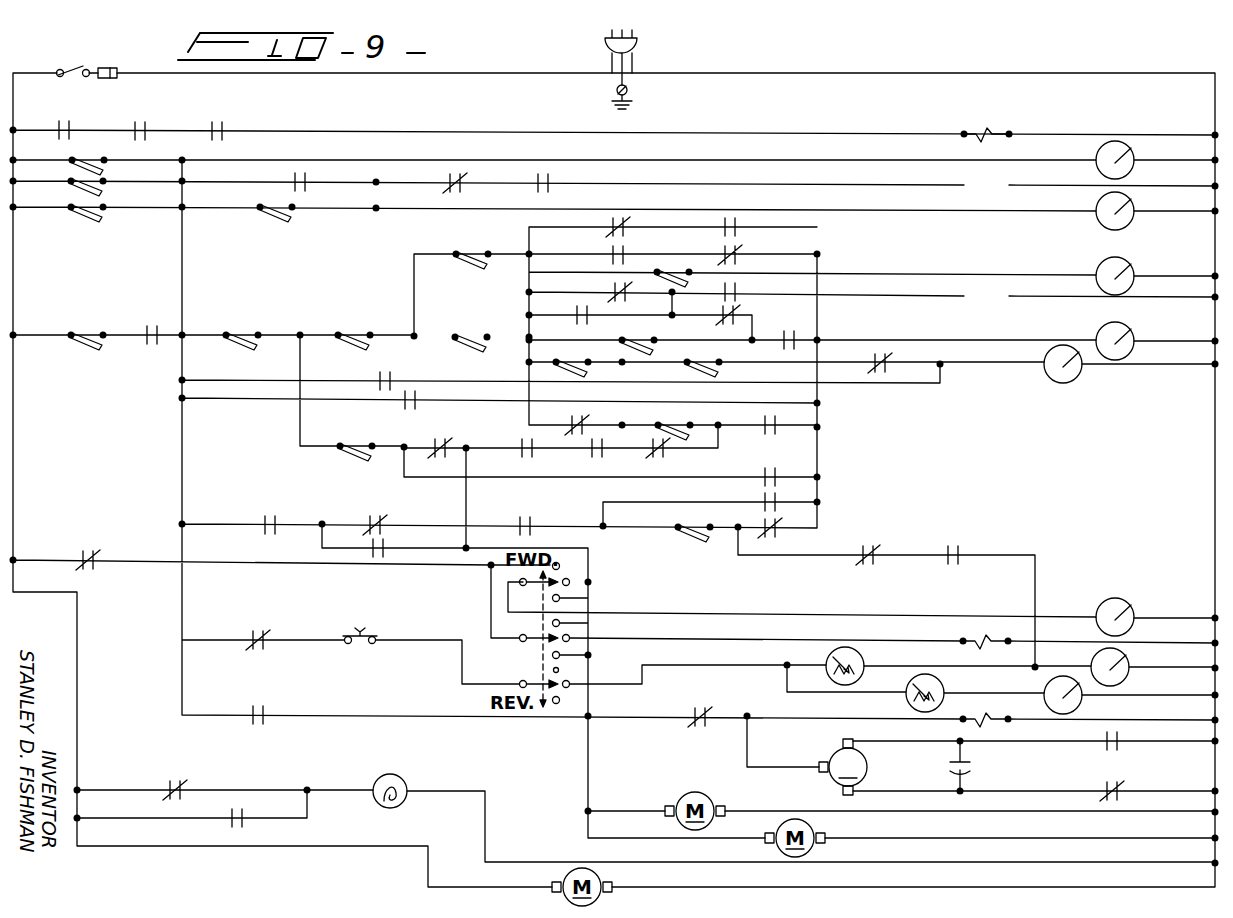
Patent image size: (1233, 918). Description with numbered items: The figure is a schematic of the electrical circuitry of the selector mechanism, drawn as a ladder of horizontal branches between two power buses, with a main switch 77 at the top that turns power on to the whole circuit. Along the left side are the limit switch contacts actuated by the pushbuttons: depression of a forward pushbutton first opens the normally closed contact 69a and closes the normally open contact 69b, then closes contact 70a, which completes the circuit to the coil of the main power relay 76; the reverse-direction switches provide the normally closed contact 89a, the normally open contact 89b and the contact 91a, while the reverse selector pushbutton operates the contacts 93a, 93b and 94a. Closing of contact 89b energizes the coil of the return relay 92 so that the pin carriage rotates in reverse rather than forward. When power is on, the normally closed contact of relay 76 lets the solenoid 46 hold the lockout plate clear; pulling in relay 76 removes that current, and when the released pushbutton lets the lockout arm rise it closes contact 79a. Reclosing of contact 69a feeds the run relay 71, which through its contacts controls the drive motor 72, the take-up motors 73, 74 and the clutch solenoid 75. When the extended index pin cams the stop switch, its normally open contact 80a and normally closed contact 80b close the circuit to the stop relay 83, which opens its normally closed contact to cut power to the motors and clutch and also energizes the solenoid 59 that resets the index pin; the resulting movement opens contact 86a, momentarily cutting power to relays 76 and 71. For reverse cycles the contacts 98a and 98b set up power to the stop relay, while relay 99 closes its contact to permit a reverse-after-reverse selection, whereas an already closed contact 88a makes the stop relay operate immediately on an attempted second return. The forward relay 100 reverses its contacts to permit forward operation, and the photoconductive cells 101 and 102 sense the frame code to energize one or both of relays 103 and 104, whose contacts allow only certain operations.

The main switch 77 is at (78, 64).
The normally open contact of switch 70 70a is at (97, 160).
The normally open contact of switch 91 91a is at (104, 189).
The normally open contact of switch 94 94a is at (98, 218).
The normally open contact of switch 89 89b is at (282, 218).
The solenoid 59 is at (1002, 106).
The main power relay 76 is at (1131, 148).
The return relay 92 is at (1131, 199).
The run relay 71 is at (1131, 264).
The stop relay 83 is at (1131, 329).
The relay 99 is at (1058, 370).
The normally open contact of switch 93 93b is at (472, 247).
The normally open contact of switch 79 79a is at (669, 262).
The normally open contact of switch 80 80a is at (632, 326).
The normally closed contact of switch 86 86a is at (82, 322).
The normally closed contact of switch 89 89a is at (248, 322).
The normally closed contact of switch 69 69a is at (358, 322).
The normally closed contact of switch 93 93a is at (480, 312).
The normally closed contact of switch 80 80b is at (570, 350).
The normally closed contact of switch 98 98a is at (717, 360).
The normally open contact of switch 69 69b is at (360, 422).
The normally open contact of switch 98 98b is at (670, 410).
The contact of limit switch 88 88a is at (688, 536).
The forward relay 100 is at (1128, 604).
The solenoid 46 is at (980, 634).
The photoconductive cell 101 is at (862, 662).
The relay 103 is at (1126, 660).
The photoconductive cell 102 is at (937, 689).
The relay 104 is at (1080, 700).
The clutch solenoid 75 is at (984, 716).
The drive motor 72 is at (870, 767).
The take-up motor 73 is at (686, 792).
The take-up motor 74 is at (810, 826).